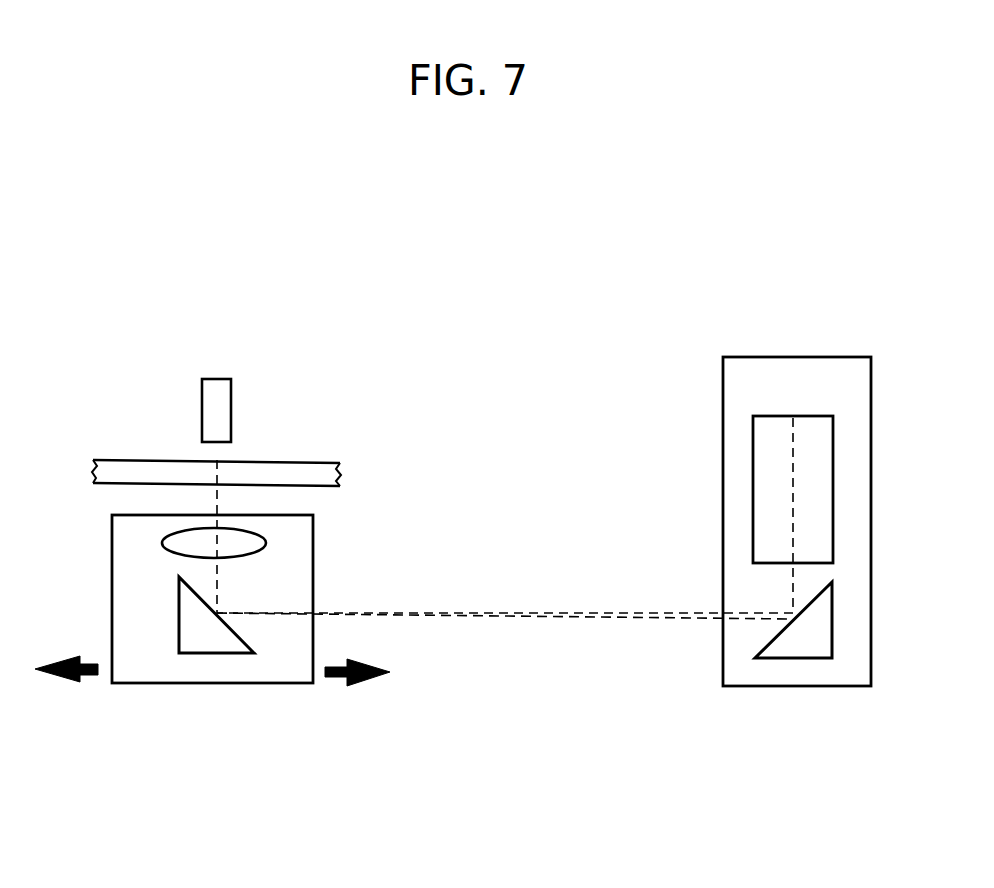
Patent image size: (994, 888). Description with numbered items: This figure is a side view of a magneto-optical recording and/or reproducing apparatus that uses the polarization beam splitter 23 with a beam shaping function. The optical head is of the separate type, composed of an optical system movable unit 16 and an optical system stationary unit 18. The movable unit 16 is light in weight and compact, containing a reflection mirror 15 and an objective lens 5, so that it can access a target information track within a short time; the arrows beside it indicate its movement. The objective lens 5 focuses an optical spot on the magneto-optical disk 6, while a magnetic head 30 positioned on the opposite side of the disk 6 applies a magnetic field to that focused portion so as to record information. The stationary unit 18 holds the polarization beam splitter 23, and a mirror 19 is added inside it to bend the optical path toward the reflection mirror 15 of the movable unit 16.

The magnetic head 30 is at (223, 379).
The magneto-optical disk 6 is at (287, 460).
The objective lens 5 is at (247, 558).
The reflection mirror 15 is at (178, 618).
The optical system movable unit 16 is at (265, 685).
The optical system stationary unit 18 is at (810, 687).
The mirror 19 is at (832, 625).
The polarization beam splitter 23 is at (776, 416).